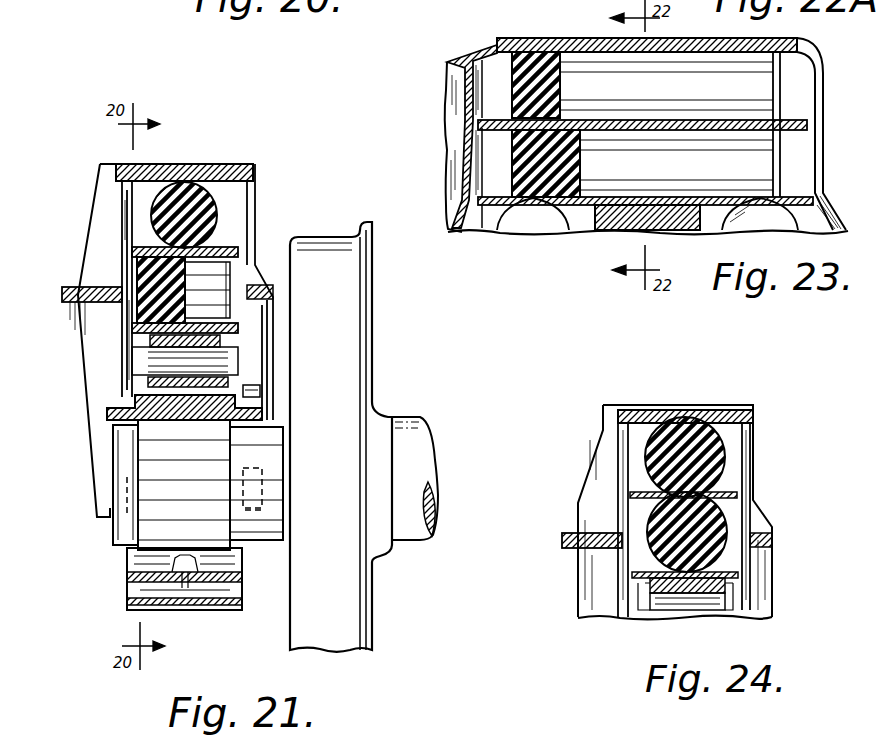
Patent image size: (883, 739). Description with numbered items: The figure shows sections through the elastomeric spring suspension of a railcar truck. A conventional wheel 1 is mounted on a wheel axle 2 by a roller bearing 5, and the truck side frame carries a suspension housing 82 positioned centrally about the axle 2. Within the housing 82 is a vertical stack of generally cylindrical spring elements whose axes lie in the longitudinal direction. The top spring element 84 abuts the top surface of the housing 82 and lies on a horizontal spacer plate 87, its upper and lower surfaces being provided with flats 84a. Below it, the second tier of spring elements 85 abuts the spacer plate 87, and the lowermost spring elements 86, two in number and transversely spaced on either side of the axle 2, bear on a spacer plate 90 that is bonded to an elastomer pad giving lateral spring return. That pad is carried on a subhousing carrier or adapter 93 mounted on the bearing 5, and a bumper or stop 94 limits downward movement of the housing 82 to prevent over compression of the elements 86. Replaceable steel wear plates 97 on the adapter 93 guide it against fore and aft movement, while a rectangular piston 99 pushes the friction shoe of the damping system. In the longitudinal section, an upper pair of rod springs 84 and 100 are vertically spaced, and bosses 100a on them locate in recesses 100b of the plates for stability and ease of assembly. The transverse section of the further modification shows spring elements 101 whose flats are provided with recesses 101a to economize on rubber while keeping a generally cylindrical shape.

In FIG. 21, the wheel 1 is at (340, 598).
In FIG. 21, the wheel axle 2 is at (409, 461).
In FIG. 21, the roller bearing 5 is at (153, 467).
In FIG. 21, the suspension housing 82 is at (262, 168).
In FIG. 21, the top spring element 84 is at (215, 220).
In FIG. 23, the top spring element 84 is at (515, 108).
In FIG. 21, the flats 84a is at (178, 190).
In FIG. 21, the second tier spring elements 85 is at (137, 270).
In FIG. 21, the lowermost spring elements 86 is at (150, 380).
In FIG. 23, the lowermost spring elements 86 is at (515, 108).
In FIG. 21, the horizontal spacer plate 87 is at (242, 252).
In FIG. 21, the spacer plate 90 is at (238, 392).
In FIG. 21, the subhousing carrier or adapter 93 is at (248, 412).
In FIG. 21, the bumper or stop 94 is at (150, 340).
In FIG. 23, the bumper or stop 94 is at (592, 226).
In FIG. 21, the replaceable steel wear plates 97 is at (125, 468).
In FIG. 21, the rectangular piston 99 is at (146, 362).
In FIG. 23, the rod spring 100 is at (520, 165).
In FIG. 23, the bosses 100a is at (545, 50).
In FIG. 23, the recesses 100b is at (530, 50).
In FIG. 24, the spring elements 101 is at (700, 455).
In FIG. 24, the recesses 101a is at (690, 408).